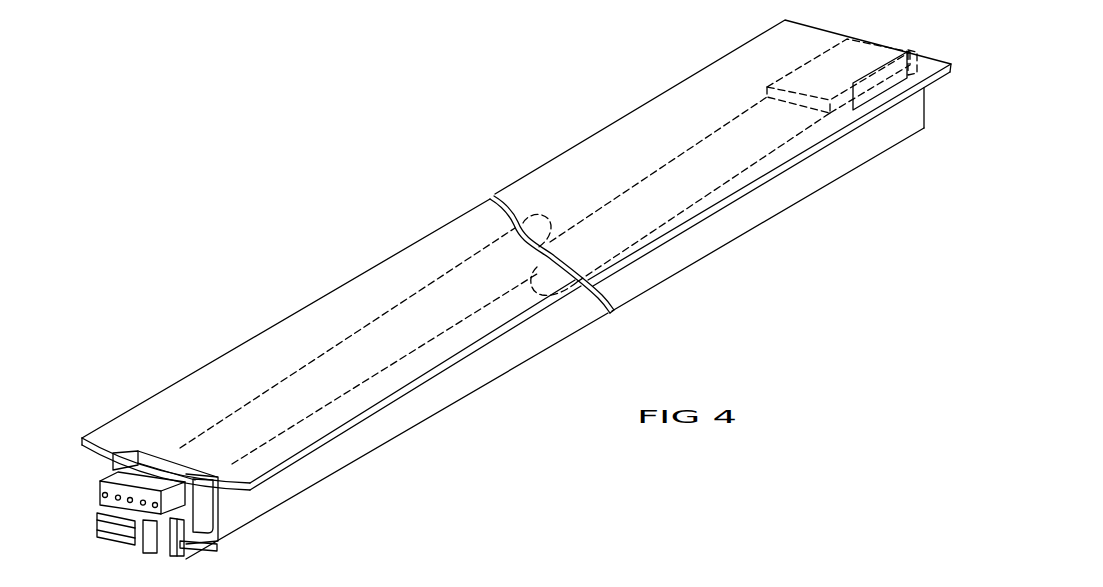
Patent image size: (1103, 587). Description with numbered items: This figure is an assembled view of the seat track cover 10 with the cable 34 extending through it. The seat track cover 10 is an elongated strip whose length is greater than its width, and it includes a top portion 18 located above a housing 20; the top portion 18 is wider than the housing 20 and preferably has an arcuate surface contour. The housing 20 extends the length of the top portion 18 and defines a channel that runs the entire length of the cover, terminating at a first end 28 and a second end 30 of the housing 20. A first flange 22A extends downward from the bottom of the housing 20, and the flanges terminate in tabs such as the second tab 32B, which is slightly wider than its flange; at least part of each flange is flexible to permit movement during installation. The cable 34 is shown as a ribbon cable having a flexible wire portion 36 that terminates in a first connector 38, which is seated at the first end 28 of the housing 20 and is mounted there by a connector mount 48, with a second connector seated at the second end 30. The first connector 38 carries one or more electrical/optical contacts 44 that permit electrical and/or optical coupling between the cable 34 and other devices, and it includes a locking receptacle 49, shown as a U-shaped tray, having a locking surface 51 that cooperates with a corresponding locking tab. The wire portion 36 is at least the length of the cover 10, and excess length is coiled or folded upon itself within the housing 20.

The seat track cover 10 is at (516, 110).
The top portion 18 is at (190, 412).
The housing 20 is at (463, 385).
The first flange 22A is at (112, 515).
The first end 28 is at (225, 498).
The second end 30 is at (925, 106).
The second tab 32B is at (222, 548).
The cable 34 is at (750, 108).
The wire portion 36 is at (685, 152).
The first connector 38 is at (140, 468).
The electrical/optical contacts 44 is at (151, 520).
The connector mount 48 is at (192, 553).
The locking receptacle 49 is at (153, 508).
The locking surface 51 is at (118, 523).